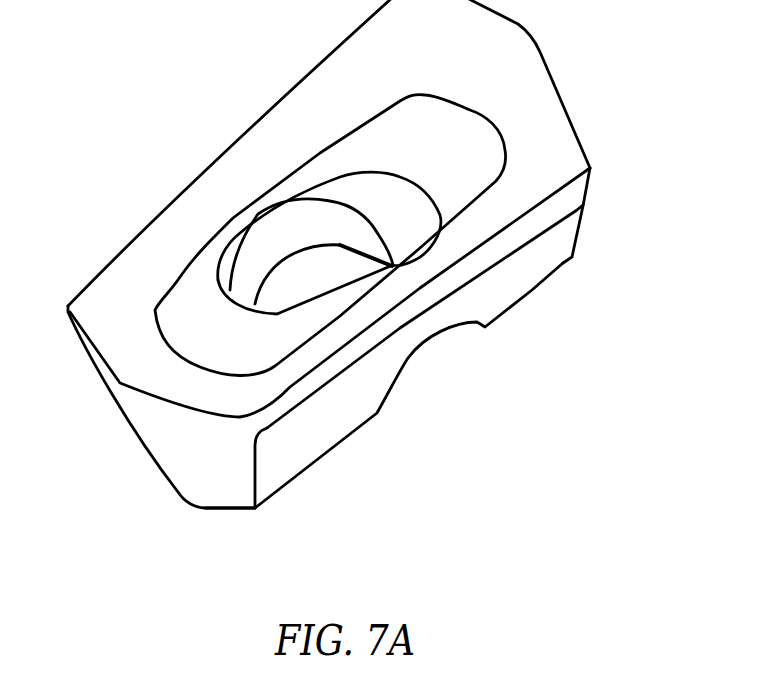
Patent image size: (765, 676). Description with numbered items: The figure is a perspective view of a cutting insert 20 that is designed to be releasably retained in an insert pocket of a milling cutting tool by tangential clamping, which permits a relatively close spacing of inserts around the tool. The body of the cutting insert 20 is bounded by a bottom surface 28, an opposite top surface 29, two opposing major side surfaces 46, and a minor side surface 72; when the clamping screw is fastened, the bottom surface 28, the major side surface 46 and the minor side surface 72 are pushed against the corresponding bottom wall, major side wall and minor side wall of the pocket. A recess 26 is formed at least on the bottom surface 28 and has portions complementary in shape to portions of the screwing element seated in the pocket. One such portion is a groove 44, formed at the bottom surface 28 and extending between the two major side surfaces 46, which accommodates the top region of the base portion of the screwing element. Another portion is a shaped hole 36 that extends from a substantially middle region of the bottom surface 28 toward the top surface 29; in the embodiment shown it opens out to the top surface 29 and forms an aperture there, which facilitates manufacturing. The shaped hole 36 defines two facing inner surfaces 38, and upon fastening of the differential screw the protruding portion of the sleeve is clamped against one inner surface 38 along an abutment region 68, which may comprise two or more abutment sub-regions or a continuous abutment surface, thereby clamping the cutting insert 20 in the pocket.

The cutting insert 20 is at (106, 488).
The recess 26 is at (431, 365).
The bottom surface 28 is at (227, 512).
The top surface 29 is at (513, 62).
The shaped hole 36 is at (255, 235).
The inner surface 38 is at (364, 190).
The groove 44 is at (457, 388).
The major side surface 46 is at (327, 417).
The abutment region 68 is at (282, 230).
The minor side surface 72 is at (147, 418).